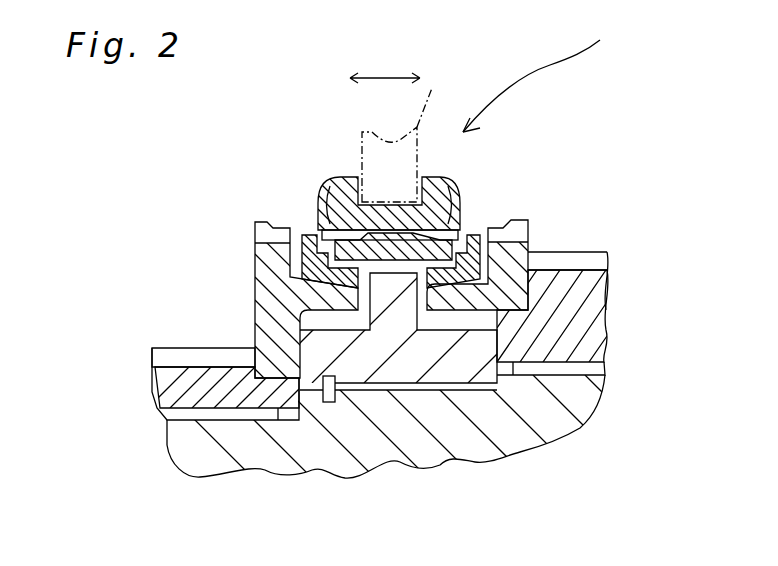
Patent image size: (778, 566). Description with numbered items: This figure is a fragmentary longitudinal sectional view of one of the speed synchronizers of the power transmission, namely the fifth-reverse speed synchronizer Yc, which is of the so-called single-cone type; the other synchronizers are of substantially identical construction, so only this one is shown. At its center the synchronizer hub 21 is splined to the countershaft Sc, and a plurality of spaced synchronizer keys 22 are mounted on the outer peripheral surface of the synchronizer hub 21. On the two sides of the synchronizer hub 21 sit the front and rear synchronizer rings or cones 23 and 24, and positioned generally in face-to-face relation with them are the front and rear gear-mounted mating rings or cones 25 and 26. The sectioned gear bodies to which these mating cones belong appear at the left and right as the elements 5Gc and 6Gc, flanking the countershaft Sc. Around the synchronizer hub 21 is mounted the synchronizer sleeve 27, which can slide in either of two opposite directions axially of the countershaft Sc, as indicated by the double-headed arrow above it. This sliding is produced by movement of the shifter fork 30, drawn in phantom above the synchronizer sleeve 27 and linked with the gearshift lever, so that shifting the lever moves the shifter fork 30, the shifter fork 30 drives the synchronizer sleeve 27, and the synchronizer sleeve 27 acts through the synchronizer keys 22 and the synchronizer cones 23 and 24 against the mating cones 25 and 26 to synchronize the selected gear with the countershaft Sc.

The synchronizer hub 21 is at (415, 372).
The synchronizer keys 22 is at (330, 193).
The front synchronizer ring (cone) 23 is at (312, 233).
The rear synchronizer ring (cone) 24 is at (473, 234).
The front gear-mounted mating ring (cone) 25 is at (253, 300).
The rear gear-mounted mating ring (cone) 26 is at (563, 247).
The synchronizer sleeve 27 is at (449, 182).
The shifter fork 30 is at (432, 88).
The 5-R speed synchronizer Yc is at (540, 70).
The left guide 5Gc is at (152, 392).
The right guide 6Gc is at (605, 322).
The countershaft Sc is at (330, 460).